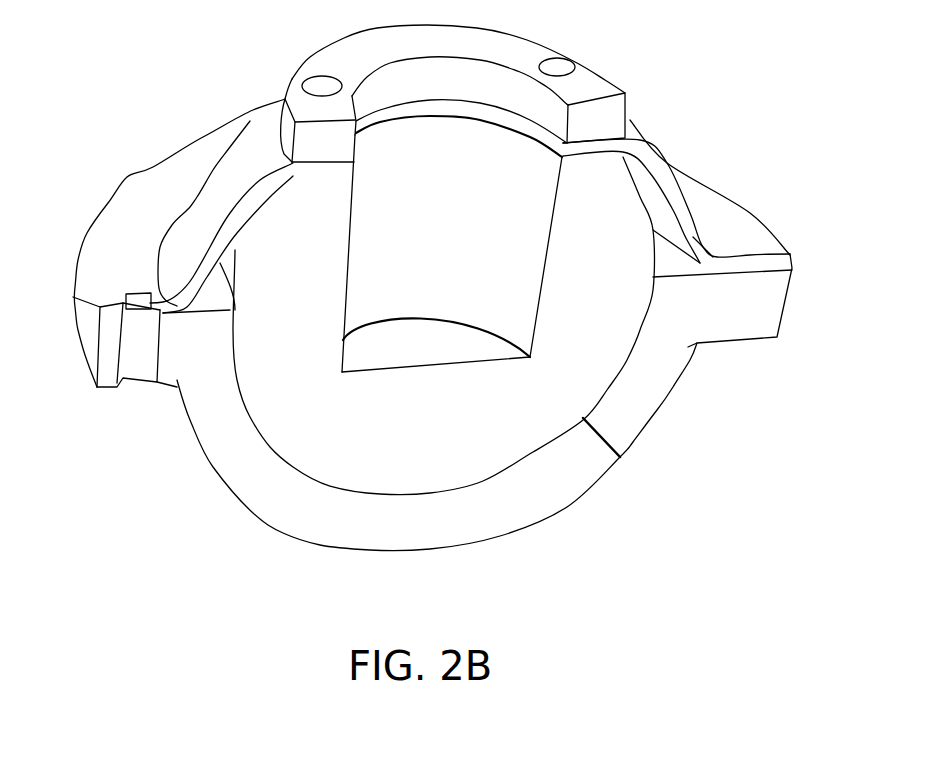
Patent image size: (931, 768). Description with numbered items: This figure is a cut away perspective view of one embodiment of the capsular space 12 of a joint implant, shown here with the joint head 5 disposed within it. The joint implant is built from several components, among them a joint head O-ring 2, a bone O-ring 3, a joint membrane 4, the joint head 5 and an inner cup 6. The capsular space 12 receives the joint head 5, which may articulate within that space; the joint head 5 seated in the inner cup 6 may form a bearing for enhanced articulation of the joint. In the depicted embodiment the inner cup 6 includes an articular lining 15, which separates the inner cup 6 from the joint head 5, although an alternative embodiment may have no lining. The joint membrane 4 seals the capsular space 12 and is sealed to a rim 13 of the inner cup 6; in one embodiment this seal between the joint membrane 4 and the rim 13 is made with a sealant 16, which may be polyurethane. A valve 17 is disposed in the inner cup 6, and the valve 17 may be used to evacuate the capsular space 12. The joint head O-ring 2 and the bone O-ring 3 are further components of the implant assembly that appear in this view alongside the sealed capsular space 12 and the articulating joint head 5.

The joint head O-ring 2 is at (340, 53).
The bone O-ring 3 is at (717, 223).
The joint membrane 4 is at (233, 153).
The joint head 5 is at (267, 410).
The inner cup 6 is at (317, 455).
The capsular space 12 is at (670, 267).
The rim 13 is at (110, 327).
The articular lining 15 is at (503, 428).
The sealant 16 is at (151, 307).
The valve 17 is at (620, 455).